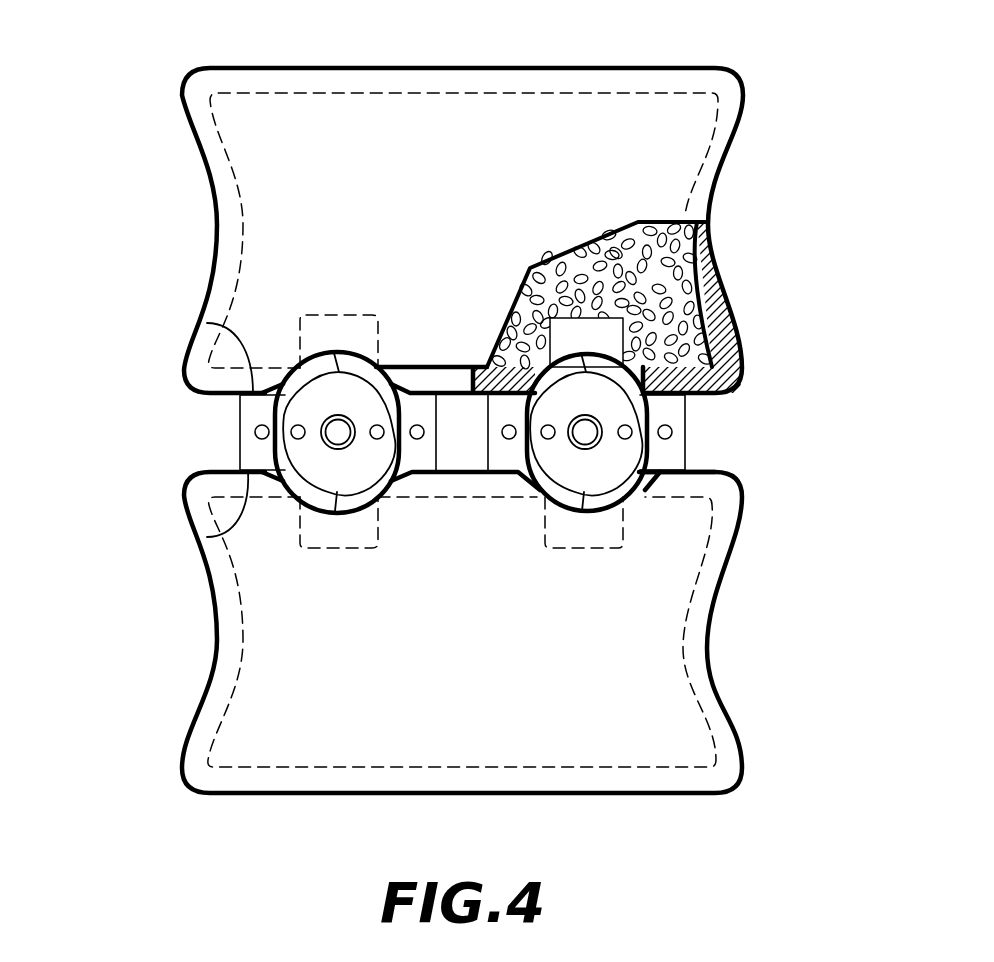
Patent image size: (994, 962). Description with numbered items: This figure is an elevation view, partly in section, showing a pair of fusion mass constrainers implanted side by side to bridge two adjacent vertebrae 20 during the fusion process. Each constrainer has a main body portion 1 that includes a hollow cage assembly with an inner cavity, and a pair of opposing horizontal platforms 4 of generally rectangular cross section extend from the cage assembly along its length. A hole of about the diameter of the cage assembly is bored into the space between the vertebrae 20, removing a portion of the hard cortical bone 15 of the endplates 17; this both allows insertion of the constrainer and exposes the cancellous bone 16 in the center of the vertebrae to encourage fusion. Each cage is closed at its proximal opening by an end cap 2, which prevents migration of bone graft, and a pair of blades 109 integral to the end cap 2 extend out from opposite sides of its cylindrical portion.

The main body portion 1 is at (226, 433).
The end cap 2 is at (292, 413).
The horizontal platforms 4 is at (207, 323).
The cortical bone 15 is at (714, 292).
The cancellous bone 16 is at (711, 247).
The endplates 17 is at (733, 398).
The vertebrae 20 is at (748, 150).
The blades 109 is at (590, 330).